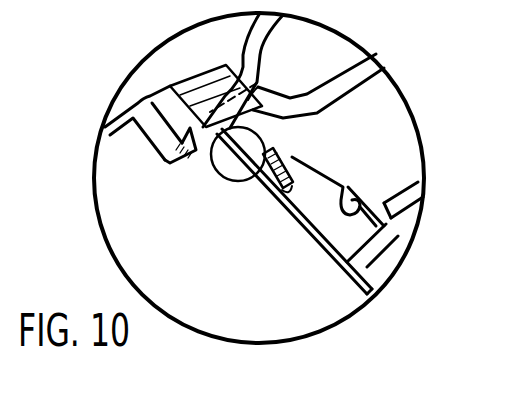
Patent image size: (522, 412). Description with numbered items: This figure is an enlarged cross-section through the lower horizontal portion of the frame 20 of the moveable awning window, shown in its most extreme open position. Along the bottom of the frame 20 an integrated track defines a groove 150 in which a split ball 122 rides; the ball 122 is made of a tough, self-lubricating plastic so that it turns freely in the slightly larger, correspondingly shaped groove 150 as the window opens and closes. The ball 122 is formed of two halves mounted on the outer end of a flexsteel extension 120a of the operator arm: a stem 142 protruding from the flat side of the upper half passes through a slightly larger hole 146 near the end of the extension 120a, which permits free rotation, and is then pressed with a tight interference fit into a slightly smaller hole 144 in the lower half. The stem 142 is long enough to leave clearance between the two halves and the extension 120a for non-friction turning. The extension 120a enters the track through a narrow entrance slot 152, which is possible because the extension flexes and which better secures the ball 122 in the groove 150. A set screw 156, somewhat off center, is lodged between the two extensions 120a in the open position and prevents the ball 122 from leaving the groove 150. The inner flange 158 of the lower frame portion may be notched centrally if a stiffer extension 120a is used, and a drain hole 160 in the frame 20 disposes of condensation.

The frame member 20 is at (398, 169).
The flexsteel extension 120a is at (330, 228).
The split ball 122 is at (246, 200).
The stem 142 is at (214, 160).
The hole 144 is at (222, 182).
The hole 146 is at (270, 134).
The groove 150 is at (254, 92).
The entrance slot 152 is at (247, 182).
The set screw 156 is at (292, 207).
The inner flange 158 is at (377, 253).
The drain hole 160 is at (262, 128).